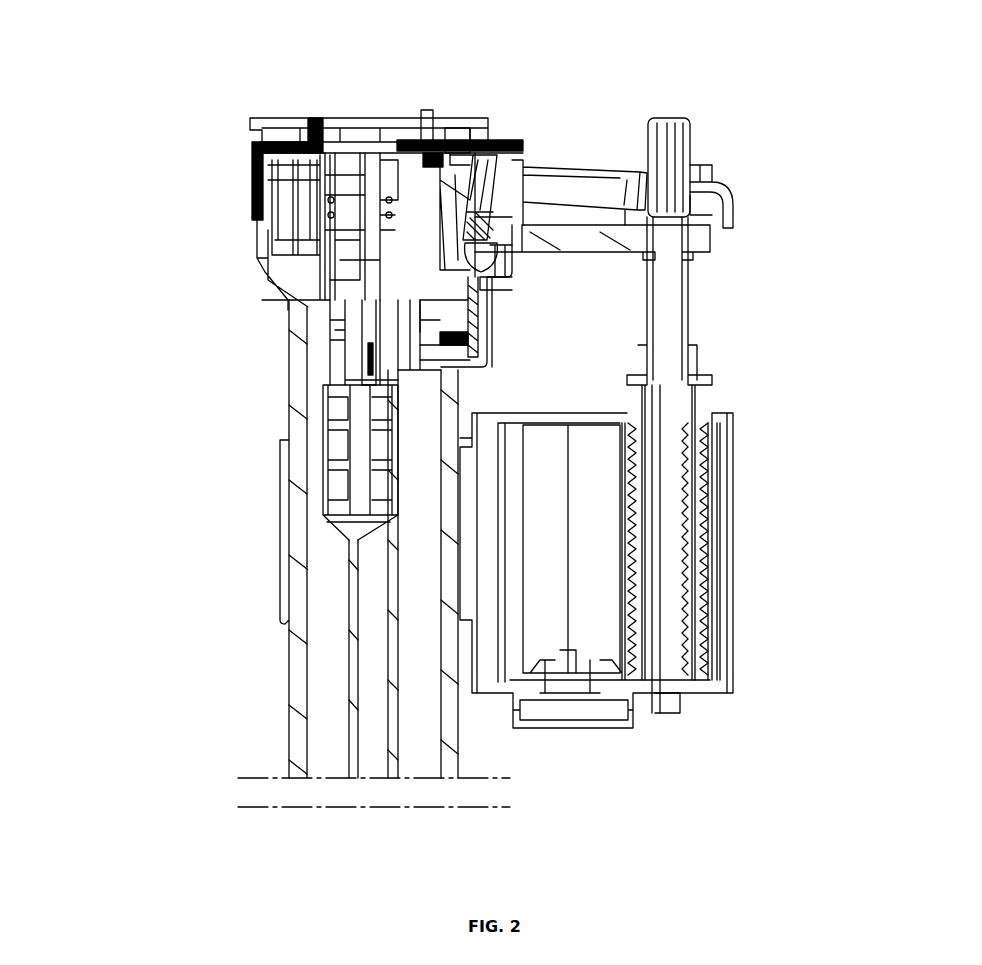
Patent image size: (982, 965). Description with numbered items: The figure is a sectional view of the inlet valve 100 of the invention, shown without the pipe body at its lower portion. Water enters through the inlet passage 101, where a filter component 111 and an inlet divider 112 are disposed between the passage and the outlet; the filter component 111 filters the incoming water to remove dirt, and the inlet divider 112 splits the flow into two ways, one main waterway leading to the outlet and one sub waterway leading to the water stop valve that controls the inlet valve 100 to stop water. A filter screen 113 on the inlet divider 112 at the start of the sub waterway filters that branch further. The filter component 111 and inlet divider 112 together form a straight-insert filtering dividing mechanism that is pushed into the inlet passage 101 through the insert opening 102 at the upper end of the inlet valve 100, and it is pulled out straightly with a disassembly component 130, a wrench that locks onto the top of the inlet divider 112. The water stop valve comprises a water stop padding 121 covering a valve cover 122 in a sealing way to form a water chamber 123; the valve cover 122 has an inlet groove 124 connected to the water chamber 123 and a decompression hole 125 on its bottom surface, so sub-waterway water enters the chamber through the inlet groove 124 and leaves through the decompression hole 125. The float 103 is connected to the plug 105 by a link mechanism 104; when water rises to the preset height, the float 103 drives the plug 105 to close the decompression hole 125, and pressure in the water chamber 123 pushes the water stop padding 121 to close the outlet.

The inlet valve 100 is at (277, 245).
The inlet passage 101 is at (370, 633).
The insert opening 102 is at (355, 532).
The float 103 is at (592, 577).
The link mechanism 104 is at (658, 287).
The plug 105 is at (520, 167).
The filter component 111 is at (358, 448).
The inlet divider 112 is at (340, 172).
The filter screen 113 is at (377, 360).
The water stop padding 121 is at (420, 110).
The valve cover 122 is at (447, 117).
The water chamber 123 is at (443, 272).
The inlet groove 124 is at (433, 320).
The decompression hole 125 is at (467, 217).
The disassembly component 130 is at (361, 117).